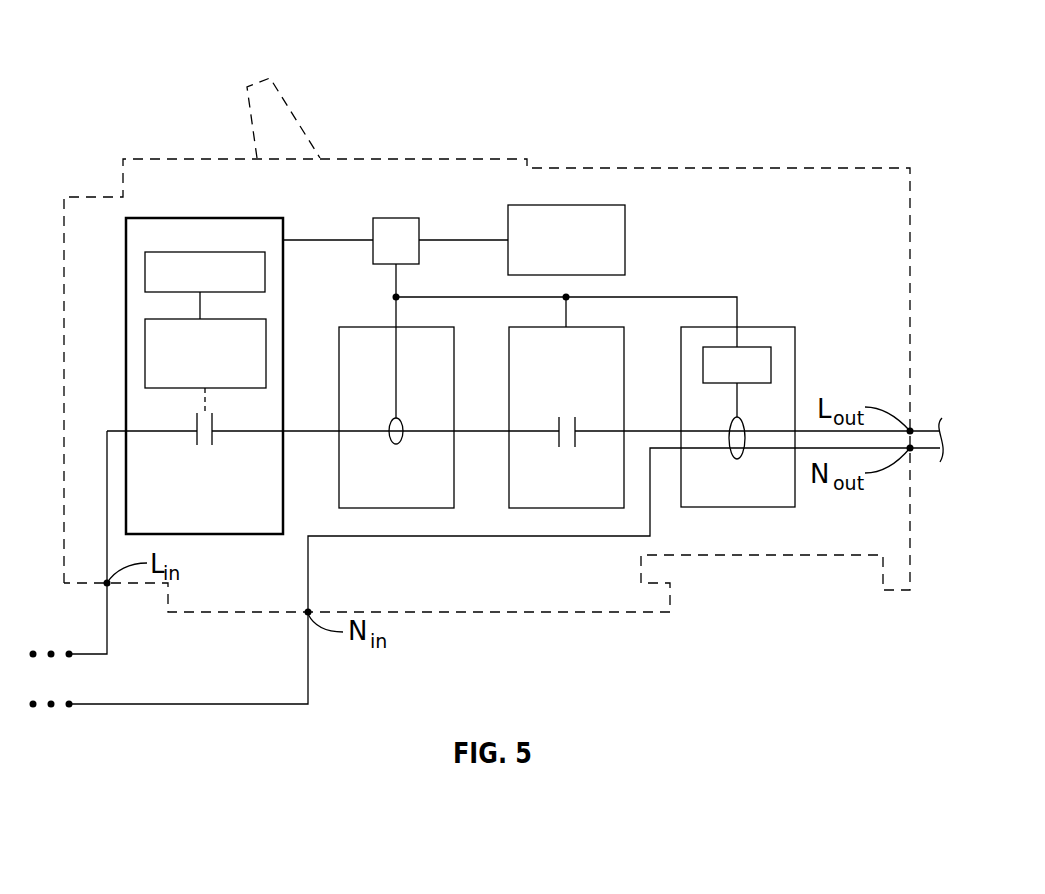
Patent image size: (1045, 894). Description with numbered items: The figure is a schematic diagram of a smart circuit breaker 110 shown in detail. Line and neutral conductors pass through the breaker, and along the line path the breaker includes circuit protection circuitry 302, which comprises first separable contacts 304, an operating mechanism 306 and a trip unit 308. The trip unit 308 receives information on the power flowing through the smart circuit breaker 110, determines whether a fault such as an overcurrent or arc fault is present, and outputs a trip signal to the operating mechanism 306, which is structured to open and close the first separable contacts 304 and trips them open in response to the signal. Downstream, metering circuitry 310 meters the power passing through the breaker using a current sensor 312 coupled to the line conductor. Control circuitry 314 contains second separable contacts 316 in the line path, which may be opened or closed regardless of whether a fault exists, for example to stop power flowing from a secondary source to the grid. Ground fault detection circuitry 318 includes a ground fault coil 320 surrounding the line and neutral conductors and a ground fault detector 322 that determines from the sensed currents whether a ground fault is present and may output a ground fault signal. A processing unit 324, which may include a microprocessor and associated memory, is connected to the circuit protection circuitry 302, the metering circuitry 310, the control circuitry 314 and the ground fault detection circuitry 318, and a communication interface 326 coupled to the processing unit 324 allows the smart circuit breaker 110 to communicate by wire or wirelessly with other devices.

The smart circuit breaker 110 is at (121, 50).
The circuit protection circuitry 302 is at (252, 534).
The first separable contacts 304 is at (176, 418).
The operating mechanism 306 is at (145, 355).
The trip unit 308 is at (212, 252).
The metering circuitry 310 is at (396, 508).
The current sensor 312 is at (391, 420).
The control circuitry 314 is at (566, 508).
The second separable contacts 316 is at (564, 403).
The ground fault detection circuitry 318 is at (745, 507).
The ground fault coil 320 is at (732, 418).
The ground fault detector 322 is at (771, 365).
The processing unit 324 is at (373, 222).
The communication interface 326 is at (625, 242).